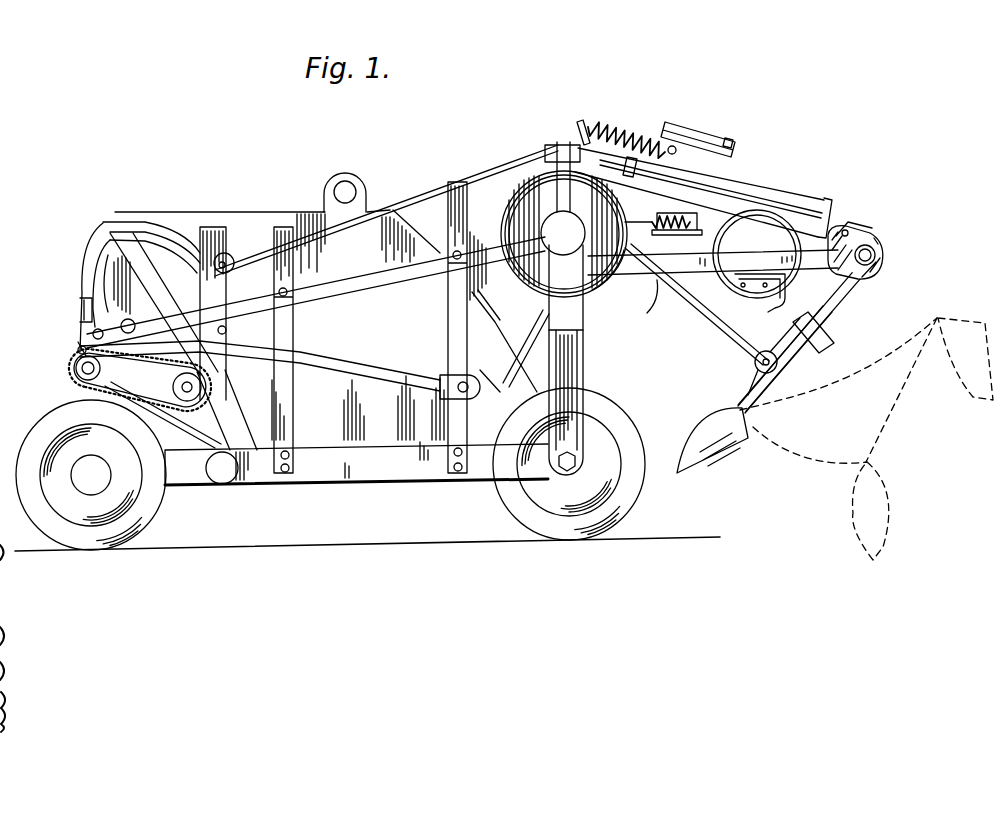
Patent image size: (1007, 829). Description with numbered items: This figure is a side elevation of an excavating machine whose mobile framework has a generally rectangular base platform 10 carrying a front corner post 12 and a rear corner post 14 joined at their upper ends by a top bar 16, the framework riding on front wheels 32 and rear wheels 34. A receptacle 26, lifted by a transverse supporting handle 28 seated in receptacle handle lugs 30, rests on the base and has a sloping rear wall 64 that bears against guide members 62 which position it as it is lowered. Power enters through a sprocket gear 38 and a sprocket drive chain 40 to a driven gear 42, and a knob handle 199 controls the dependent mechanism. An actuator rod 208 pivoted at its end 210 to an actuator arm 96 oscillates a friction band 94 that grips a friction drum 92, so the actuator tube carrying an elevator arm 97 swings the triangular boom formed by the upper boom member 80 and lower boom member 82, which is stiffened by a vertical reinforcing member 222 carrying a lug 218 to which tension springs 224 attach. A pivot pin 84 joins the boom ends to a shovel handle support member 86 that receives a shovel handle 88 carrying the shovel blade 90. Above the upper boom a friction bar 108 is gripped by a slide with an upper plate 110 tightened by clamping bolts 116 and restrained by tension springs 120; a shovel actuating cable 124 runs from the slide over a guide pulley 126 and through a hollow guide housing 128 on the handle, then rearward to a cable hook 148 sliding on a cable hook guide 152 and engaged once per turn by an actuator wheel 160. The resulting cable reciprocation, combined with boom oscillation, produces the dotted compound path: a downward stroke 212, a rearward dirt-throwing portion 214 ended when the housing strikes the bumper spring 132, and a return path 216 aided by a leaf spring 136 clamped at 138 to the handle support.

The base platform 10 is at (367, 468).
The front corner post 12 is at (578, 315).
The rear corner post 14 is at (110, 248).
The top bar 16 is at (425, 263).
The receptacle 26 is at (247, 222).
The transverse supporting handle 28 is at (348, 188).
The receptacle handle lugs 30 is at (358, 196).
The front wheels 32 is at (625, 498).
The rear wheels 34 is at (148, 513).
The sprocket gear 38 is at (73, 378).
The sprocket drive chain 40 is at (143, 412).
The driven gear 42 is at (208, 395).
The guide members 62 is at (157, 222).
The sloping wall 64 is at (222, 332).
The upper boom member 80 is at (745, 172).
The lower boom member 82 is at (652, 280).
The pivot pin 84 is at (884, 248).
The shovel handle support member 86 is at (833, 303).
The shovel handle 88 is at (760, 387).
The shovel blade 90 is at (700, 465).
The friction drum 92 is at (603, 295).
The friction band 94 is at (537, 180).
The actuator arm 96 is at (502, 307).
The elevator arm 97 is at (488, 377).
The friction bar 108 is at (713, 160).
The upper plate 110 is at (677, 133).
The clamping bolts 116 is at (697, 142).
The tension springs 120 is at (610, 130).
The shovel actuating cable 124 is at (490, 166).
The guide pulley 126 is at (848, 222).
The hollow guide housing 128 is at (792, 353).
The bumper spring 132 is at (780, 297).
The leaf spring 136 is at (790, 190).
The clamp 138 is at (820, 327).
The cable hook 148 is at (78, 313).
The cable hook guide 152 is at (73, 332).
The actuator wheel 160 is at (113, 292).
The knob handle 199 is at (78, 342).
The actuator rod 208 is at (333, 365).
The pivoted end 210 is at (513, 323).
The downward stroke portion 212 is at (903, 403).
The dirt-throwing portion 214 is at (803, 460).
The return path 216 is at (827, 397).
The lug 218 is at (673, 235).
The vertical reinforcing member 222 is at (700, 276).
The tension springs 224 is at (662, 215).